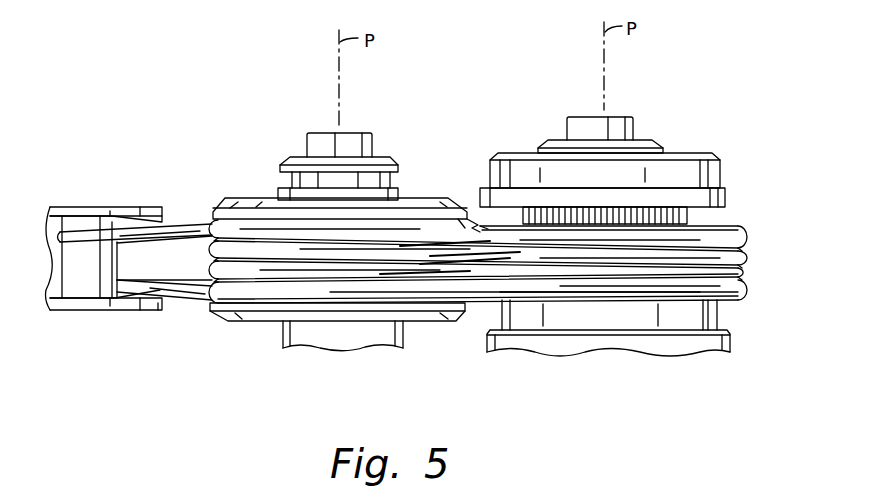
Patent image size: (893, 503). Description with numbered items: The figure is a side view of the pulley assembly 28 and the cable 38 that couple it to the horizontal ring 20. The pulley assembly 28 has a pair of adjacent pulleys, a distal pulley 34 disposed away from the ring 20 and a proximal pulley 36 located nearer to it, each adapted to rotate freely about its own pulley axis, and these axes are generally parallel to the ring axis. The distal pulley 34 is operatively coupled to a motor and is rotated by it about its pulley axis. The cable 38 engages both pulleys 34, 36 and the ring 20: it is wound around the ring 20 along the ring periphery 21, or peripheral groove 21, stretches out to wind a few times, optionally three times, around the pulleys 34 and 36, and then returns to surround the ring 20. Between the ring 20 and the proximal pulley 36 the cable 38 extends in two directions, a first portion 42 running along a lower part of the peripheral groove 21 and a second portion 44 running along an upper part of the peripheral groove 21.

The horizontal ring 20 is at (66, 204).
The ring periphery / peripheral groove 21 is at (121, 257).
The second portion of the cable 44 is at (186, 224).
The first portion of the cable 42 is at (174, 300).
The cable 38 is at (745, 274).
The proximal pulley 36 is at (430, 210).
The distal pulley 34 is at (722, 166).
The pulley assembly 28 is at (694, 98).